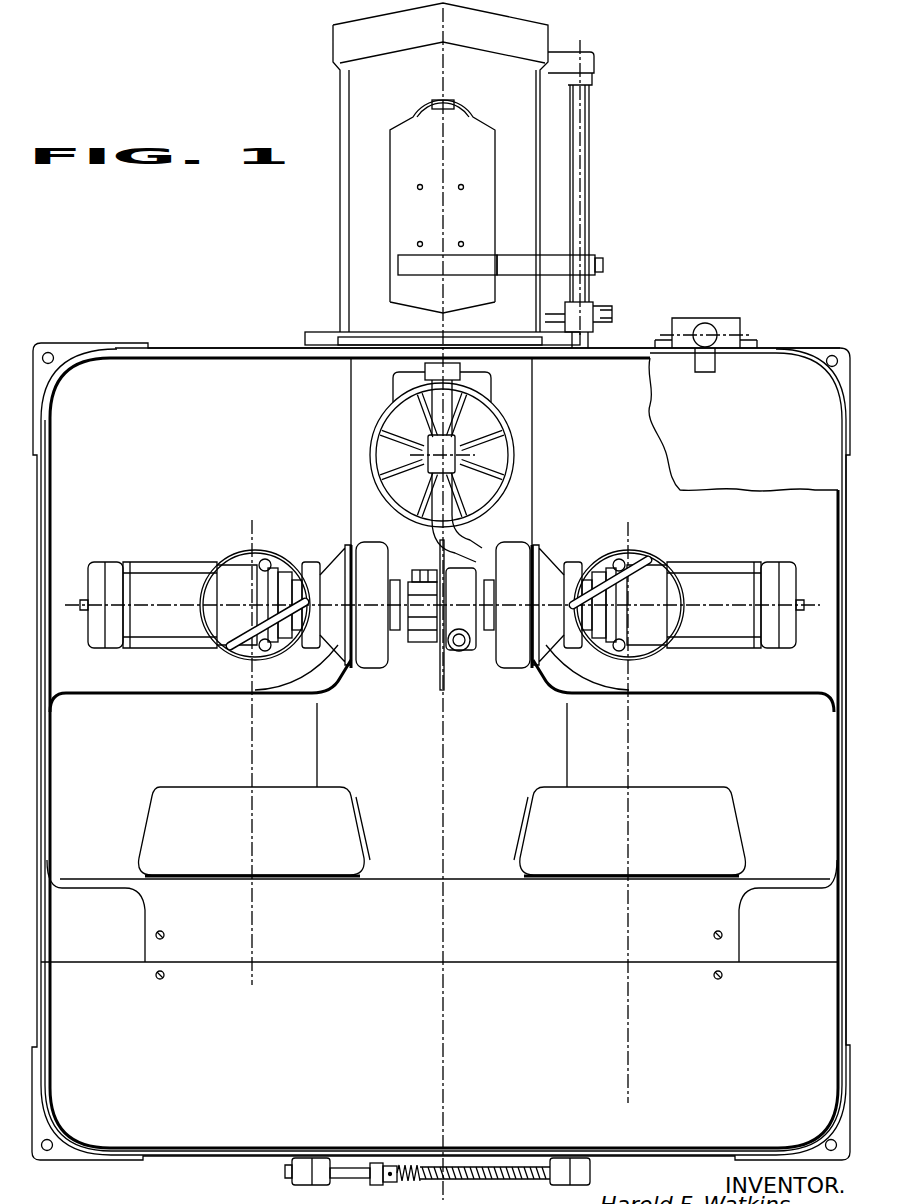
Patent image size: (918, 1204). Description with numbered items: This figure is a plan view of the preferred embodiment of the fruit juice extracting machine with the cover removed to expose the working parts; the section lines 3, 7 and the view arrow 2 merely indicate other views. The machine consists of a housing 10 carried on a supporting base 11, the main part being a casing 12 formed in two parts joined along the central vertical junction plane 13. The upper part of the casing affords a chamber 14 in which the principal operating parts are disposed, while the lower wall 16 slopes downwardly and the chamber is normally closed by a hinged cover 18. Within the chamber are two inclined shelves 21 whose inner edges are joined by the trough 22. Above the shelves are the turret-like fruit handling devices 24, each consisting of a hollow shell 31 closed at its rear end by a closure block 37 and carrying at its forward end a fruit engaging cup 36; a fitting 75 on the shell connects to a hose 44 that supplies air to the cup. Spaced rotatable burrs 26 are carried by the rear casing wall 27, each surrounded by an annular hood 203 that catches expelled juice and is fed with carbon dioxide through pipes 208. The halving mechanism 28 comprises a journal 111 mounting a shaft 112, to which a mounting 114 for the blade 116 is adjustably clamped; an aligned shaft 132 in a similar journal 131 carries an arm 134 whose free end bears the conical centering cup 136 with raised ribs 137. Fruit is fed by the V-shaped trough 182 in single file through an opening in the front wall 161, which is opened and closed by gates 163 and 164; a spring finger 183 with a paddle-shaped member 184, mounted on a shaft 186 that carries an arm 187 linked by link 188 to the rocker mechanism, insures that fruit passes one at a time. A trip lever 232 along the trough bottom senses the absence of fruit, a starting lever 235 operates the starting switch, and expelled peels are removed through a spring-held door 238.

The view direction arrow 2 is at (462, 298).
The section line 3- 3 is at (655, 268).
The section line 7- 7 is at (68, 628).
The housing 10 is at (222, 323).
The supporting base 11 is at (650, 1103).
The casing 12 is at (310, 952).
The central vertical junction plane 13 is at (441, 936).
The chamber 14 is at (500, 758).
The lower wall 16 is at (410, 758).
The hinged cover 18 is at (777, 367).
The inclined shelves 21 is at (177, 682).
The trough 22 is at (520, 524).
The fruit handling devices 24 is at (215, 554).
The rotatable burrs 26 is at (297, 786).
The rear casing wall 27 is at (475, 878).
The mechanism for halving articles of fruit 28 is at (392, 516).
The hollow shell 31 is at (140, 578).
The fruit engaging cup 36 is at (323, 566).
The closure block 37 is at (97, 568).
The hose 44 is at (441, 610).
The fitting 75 is at (232, 652).
The journal 111 is at (365, 662).
The shaft 112 is at (406, 642).
The mounting 114 is at (429, 570).
The blade 116 is at (444, 676).
The journal 131 is at (508, 665).
The shaft 132 is at (472, 562).
The arm 134 is at (453, 545).
The centering cup 136 is at (500, 408).
The raised ribs 137 is at (448, 440).
The front wall 161 is at (622, 348).
The gate 163 is at (368, 342).
The gate 164 is at (507, 344).
The V-shaped trough 182 is at (356, 100).
The spring finger 183 is at (508, 259).
The paddle-shaped member 184 is at (469, 259).
The shaft 186 is at (585, 137).
The arm 187 is at (589, 306).
The link 188 is at (548, 314).
The annular hood 203 is at (199, 799).
The pipes 208 is at (250, 879).
The trip lever 232 is at (476, 135).
The starting lever 235 is at (714, 326).
The spring-held door 238 is at (512, 1160).